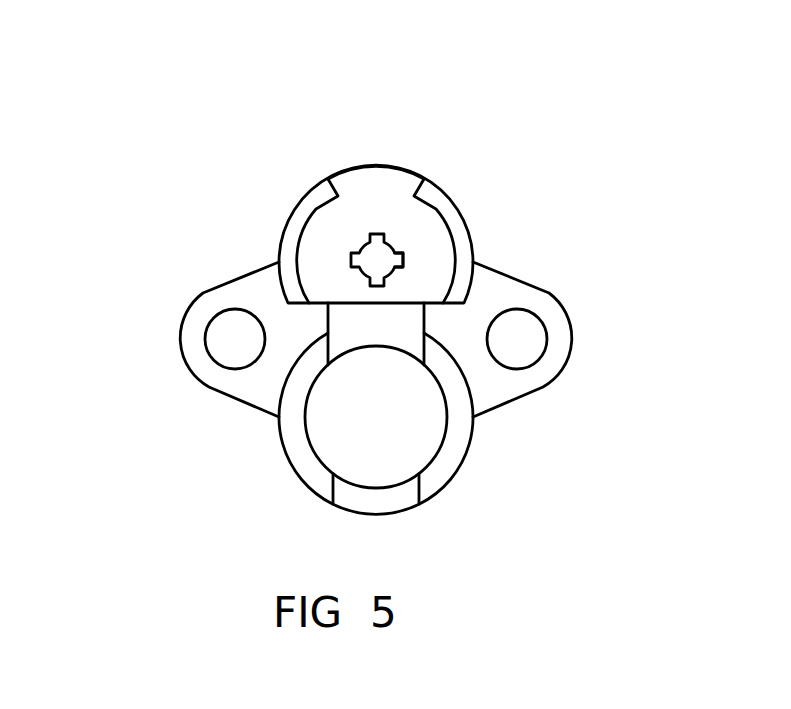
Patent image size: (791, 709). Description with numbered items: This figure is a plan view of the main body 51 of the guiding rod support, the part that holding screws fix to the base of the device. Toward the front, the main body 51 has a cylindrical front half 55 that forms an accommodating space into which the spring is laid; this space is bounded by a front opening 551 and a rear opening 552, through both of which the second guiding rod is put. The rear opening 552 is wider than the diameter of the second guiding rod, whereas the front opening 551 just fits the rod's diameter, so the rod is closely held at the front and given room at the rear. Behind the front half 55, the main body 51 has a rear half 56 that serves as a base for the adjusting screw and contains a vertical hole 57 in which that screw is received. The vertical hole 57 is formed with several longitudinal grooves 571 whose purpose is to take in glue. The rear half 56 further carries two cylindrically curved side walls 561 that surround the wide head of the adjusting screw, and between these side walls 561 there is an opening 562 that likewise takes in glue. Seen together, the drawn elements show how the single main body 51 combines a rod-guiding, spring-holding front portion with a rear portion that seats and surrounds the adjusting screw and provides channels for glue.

The main body 51 is at (309, 336).
The cylindrical front half 55 is at (324, 468).
The front opening 551 is at (411, 554).
The rear opening 552 is at (447, 425).
The rear half 56 is at (396, 156).
The cylindrically curved side walls 561 is at (396, 218).
The opening 562 is at (385, 94).
The vertical hole 57 is at (427, 163).
The longitudinal grooves 571 is at (480, 191).